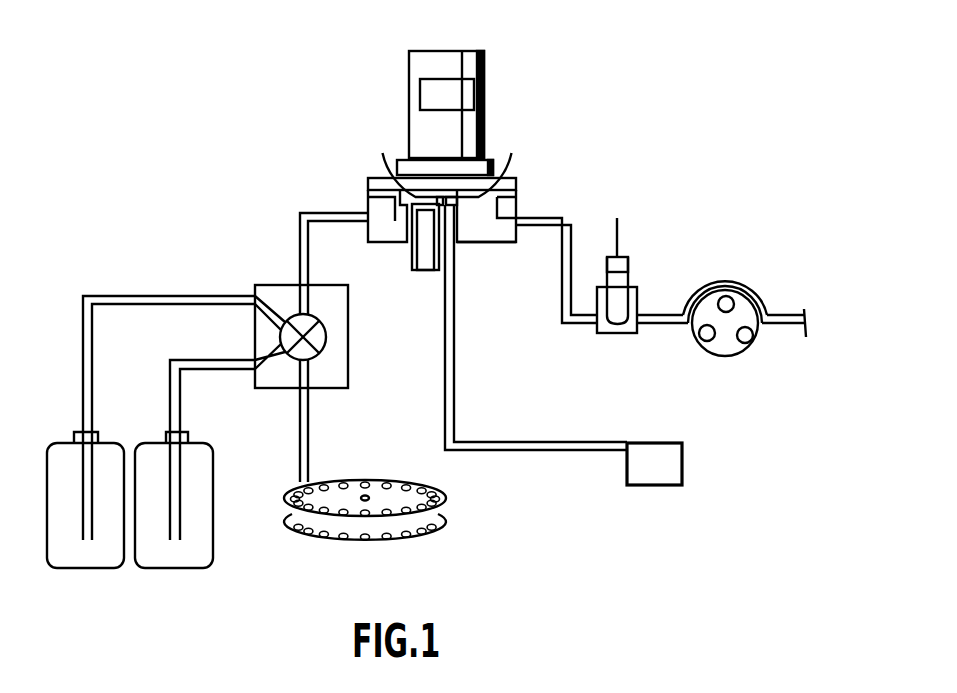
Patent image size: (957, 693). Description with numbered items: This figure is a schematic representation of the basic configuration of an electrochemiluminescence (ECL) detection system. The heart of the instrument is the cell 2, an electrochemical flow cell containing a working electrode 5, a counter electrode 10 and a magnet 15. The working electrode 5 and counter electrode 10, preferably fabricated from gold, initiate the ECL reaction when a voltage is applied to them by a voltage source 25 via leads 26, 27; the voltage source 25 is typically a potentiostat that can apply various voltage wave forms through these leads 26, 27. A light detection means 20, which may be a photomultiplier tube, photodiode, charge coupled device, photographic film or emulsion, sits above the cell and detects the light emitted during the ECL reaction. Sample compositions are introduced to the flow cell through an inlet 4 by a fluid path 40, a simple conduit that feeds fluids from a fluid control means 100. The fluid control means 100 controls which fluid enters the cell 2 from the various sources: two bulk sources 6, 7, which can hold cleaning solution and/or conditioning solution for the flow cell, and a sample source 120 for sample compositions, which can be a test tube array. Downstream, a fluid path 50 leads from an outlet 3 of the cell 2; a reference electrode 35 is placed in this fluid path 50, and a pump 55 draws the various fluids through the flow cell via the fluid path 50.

The cell 2 is at (480, 236).
The outlet 3 is at (519, 217).
The inlet 4 is at (366, 213).
The working electrode 5 is at (390, 160).
The bulk source 6 is at (58, 497).
The bulk source 7 is at (213, 497).
The counter electrode 10 is at (506, 161).
The magnet 15 is at (412, 258).
The light detection means 20 is at (486, 64).
The voltage source 25 is at (683, 468).
The lead 26 is at (527, 442).
The lead 27 is at (533, 452).
The reference electrode 35 is at (630, 262).
The fluid path 40 is at (300, 265).
The fluid path 50 is at (568, 217).
The pump 55 is at (763, 294).
The fluid control means 100 is at (348, 343).
The sample source 120 is at (446, 494).